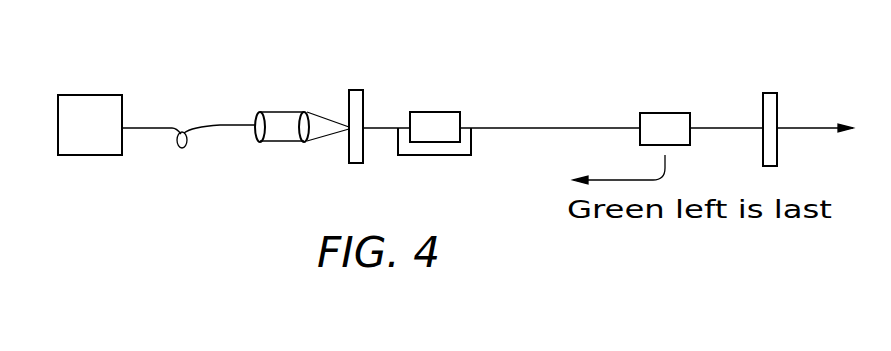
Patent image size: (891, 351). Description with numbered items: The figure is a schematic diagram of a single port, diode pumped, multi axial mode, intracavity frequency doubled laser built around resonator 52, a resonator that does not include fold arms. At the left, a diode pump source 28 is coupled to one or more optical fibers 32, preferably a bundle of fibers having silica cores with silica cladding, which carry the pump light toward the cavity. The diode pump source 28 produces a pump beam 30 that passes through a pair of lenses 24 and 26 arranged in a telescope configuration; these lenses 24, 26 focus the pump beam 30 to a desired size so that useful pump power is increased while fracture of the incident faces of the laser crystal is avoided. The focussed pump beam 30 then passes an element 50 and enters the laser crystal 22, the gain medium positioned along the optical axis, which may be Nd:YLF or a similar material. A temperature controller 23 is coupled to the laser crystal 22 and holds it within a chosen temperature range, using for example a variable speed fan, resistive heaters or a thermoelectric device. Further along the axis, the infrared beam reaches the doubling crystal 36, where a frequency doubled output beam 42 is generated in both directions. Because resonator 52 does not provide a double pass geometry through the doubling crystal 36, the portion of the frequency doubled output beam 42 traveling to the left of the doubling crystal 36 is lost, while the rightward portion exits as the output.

The laser crystal 22 is at (428, 112).
The temperature controller 23 is at (447, 152).
The lens 24 is at (259, 112).
The lens 26 is at (305, 112).
The diode pump source 28 is at (85, 95).
The pump beam 30 is at (326, 131).
The optical fiber 32 is at (170, 128).
The doubling crystal 36 is at (662, 112).
The frequency doubled output beam 42 is at (805, 128).
The polarization plate 50 is at (355, 90).
The resonator 52 is at (560, 47).